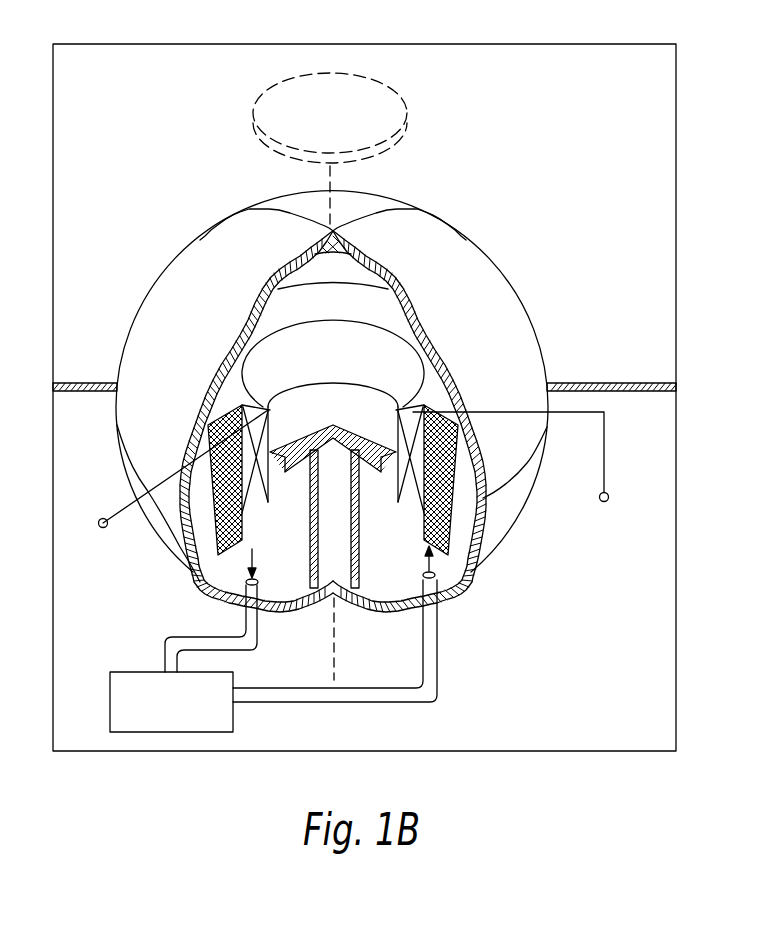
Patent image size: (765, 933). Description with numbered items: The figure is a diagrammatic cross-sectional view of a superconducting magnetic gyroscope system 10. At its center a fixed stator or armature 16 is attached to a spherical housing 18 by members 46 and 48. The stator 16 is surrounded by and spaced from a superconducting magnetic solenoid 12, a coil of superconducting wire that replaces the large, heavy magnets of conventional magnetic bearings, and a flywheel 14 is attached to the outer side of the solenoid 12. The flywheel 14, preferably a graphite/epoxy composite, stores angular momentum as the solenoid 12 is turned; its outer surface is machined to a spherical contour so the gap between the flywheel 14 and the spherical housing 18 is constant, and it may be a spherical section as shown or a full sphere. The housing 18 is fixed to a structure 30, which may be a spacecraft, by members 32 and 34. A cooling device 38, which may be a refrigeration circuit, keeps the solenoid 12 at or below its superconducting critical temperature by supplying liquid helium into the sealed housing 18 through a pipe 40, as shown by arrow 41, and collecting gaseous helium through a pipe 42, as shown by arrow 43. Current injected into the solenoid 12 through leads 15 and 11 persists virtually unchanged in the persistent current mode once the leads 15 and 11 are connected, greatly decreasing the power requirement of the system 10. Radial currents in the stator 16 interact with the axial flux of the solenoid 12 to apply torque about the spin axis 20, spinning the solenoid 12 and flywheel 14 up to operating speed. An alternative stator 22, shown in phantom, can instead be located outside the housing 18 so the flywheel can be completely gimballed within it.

The superconducting magnetic gyroscope system 10 is at (196, 185).
The lead 11 is at (123, 505).
The superconducting magnetic solenoid 12 is at (265, 435).
The flywheel 14 is at (213, 510).
The lead 15 is at (605, 452).
The stator 16 is at (348, 398).
The spherical housing 18 is at (523, 302).
The spin axis 20 is at (340, 648).
The stator 22 is at (408, 107).
The structure 30 is at (565, 42).
The member 32 is at (585, 382).
The member 34 is at (81, 393).
The cooling device 38 is at (187, 713).
The pipe 40 is at (333, 704).
The arrow 41 is at (428, 565).
The pipe 42 is at (250, 651).
The arrow 43 is at (253, 560).
The member 46 is at (311, 519).
The member 48 is at (359, 523).